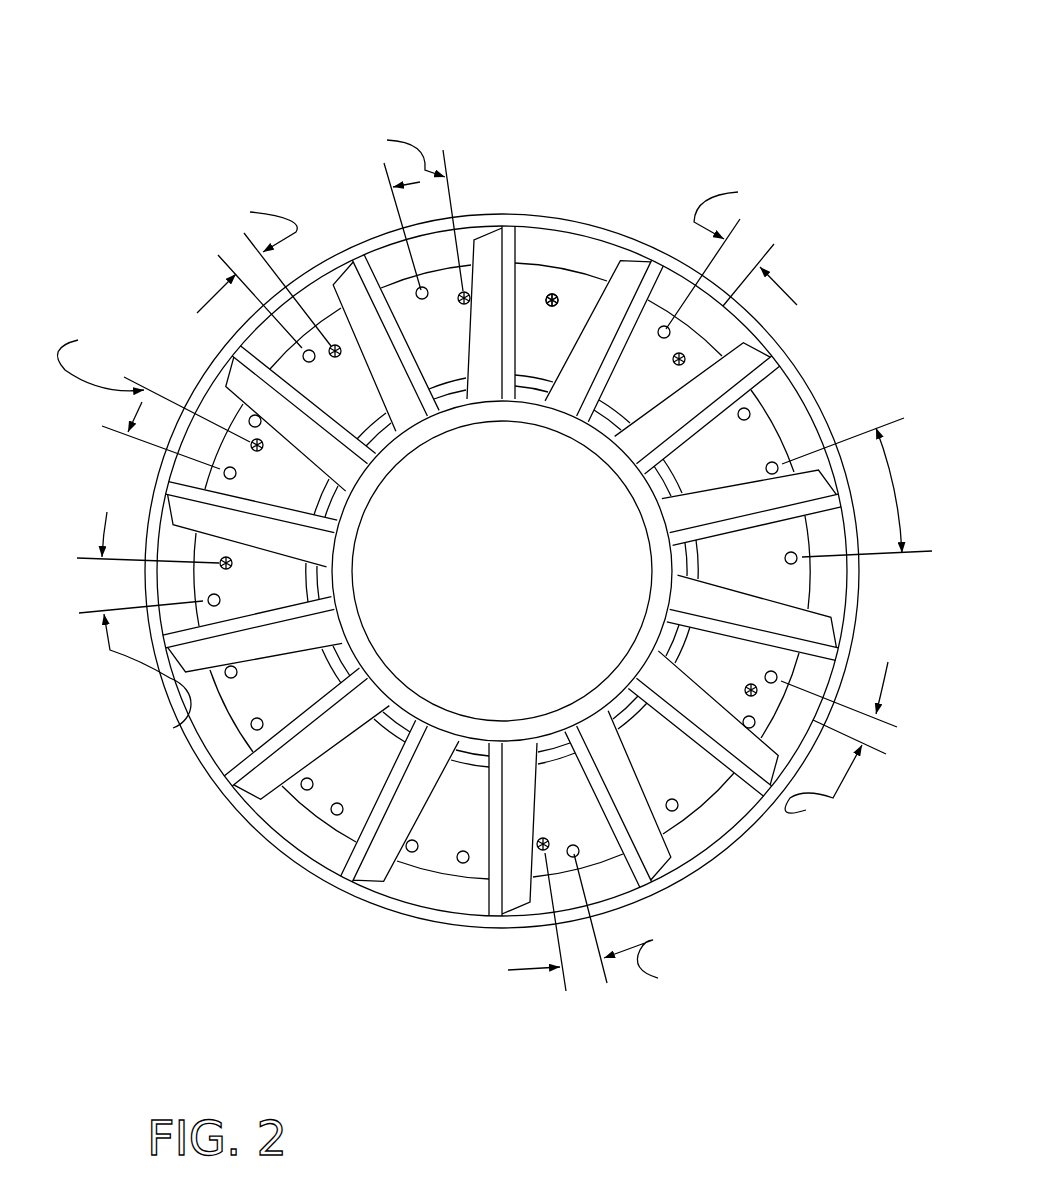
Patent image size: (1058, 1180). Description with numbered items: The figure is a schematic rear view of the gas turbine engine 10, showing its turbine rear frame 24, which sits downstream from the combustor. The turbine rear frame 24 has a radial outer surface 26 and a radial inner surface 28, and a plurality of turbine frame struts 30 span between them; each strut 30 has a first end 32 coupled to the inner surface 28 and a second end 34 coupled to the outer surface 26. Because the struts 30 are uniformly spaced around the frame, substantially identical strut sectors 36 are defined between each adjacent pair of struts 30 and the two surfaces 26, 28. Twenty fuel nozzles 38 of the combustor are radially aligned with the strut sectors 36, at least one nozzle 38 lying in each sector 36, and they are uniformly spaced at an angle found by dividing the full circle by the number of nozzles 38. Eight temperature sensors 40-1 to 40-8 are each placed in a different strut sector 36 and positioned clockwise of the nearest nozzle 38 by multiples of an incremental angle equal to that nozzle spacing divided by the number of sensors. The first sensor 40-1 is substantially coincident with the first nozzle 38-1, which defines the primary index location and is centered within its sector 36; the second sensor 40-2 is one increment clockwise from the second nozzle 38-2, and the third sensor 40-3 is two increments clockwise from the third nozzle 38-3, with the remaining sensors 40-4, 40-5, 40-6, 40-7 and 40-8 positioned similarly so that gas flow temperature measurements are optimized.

The gas turbine engine 10 is at (230, 46).
The turbine rear frame 24 is at (505, 204).
The radial outer surface 26 is at (790, 398).
The radial inner surface 28 is at (650, 493).
The turbine frame strut 30 is at (265, 775).
The first end 32 is at (420, 738).
The second end 34 is at (405, 880).
The strut sector 36 is at (268, 708).
The fuel nozzle 38 is at (678, 807).
The first nozzle 38-1 is at (551, 293).
The second nozzle 38-2 is at (580, 857).
The third nozzle 38-3 is at (776, 676).
The first sensor 40-1 is at (549, 308).
The second sensor 40-2 is at (543, 852).
The third sensor 40-3 is at (760, 705).
The fourth sensor 40-4 is at (660, 333).
The fifth sensor 40-5 is at (173, 563).
The sixth sensor 40-6 is at (368, 380).
The seventh sensor 40-7 is at (210, 418).
The eighth sensor 40-8 is at (458, 258).